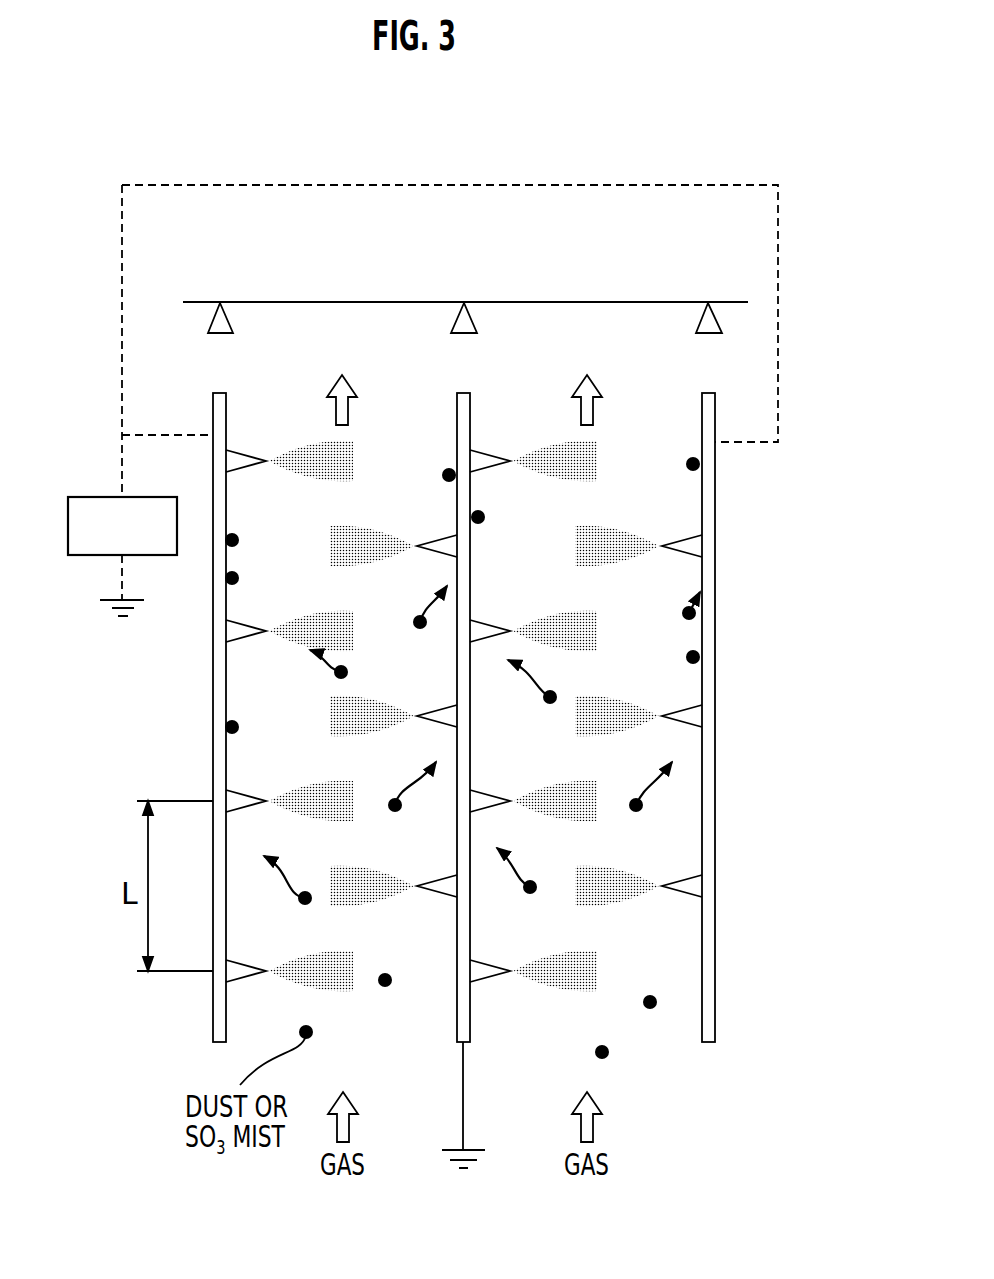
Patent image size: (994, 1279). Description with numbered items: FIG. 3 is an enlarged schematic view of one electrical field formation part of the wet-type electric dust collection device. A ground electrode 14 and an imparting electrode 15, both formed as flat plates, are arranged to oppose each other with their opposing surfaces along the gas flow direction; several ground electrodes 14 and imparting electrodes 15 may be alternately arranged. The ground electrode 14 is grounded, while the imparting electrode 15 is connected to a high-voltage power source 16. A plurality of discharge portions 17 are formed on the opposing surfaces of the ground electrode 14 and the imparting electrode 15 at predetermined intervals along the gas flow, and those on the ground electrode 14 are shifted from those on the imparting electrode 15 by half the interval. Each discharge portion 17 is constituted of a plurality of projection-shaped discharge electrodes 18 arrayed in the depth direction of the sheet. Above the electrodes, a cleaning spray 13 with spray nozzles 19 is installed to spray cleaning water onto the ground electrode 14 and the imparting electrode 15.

The cleaning spray 13 is at (594, 302).
The ground electrode 14 is at (457, 405).
The imparting electrode 15 is at (213, 405).
The high-voltage power source 16 is at (86, 497).
The discharge portion 17 is at (256, 447).
The discharge electrode 18 is at (257, 459).
The spray nozzle 19 is at (226, 320).